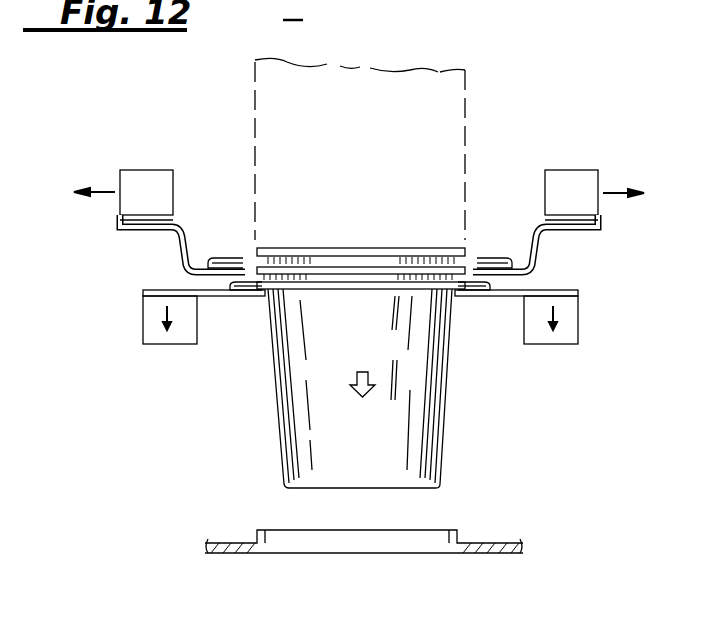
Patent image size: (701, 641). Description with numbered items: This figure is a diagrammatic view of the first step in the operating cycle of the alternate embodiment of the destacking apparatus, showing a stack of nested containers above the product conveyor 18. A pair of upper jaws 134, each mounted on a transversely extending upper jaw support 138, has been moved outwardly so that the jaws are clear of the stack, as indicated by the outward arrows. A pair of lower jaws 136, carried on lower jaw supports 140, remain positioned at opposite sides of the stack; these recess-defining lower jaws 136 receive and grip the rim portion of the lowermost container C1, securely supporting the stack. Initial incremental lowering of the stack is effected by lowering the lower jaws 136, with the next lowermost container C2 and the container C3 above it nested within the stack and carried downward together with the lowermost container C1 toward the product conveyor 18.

The product conveyor 18 is at (478, 535).
The upper jaws 134 is at (216, 264).
The lower jaws 136 is at (234, 296).
The upper jaw supports 138 is at (146, 179).
The lower jaw supports 140 is at (164, 344).
The lowermost container C1 is at (280, 412).
The next lowermost container C2 is at (350, 270).
The outer container C3 is at (373, 248).